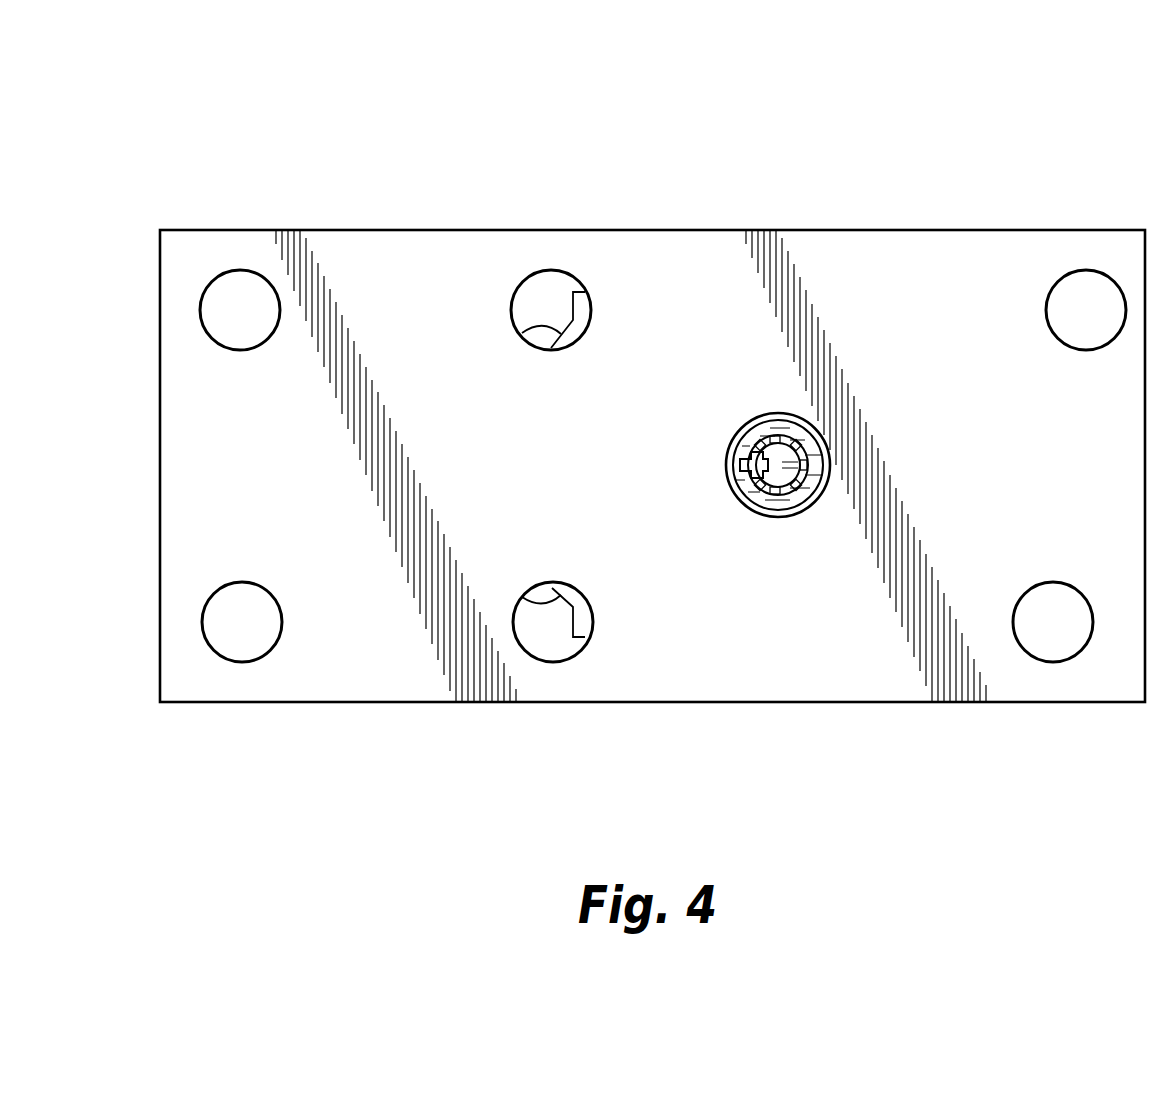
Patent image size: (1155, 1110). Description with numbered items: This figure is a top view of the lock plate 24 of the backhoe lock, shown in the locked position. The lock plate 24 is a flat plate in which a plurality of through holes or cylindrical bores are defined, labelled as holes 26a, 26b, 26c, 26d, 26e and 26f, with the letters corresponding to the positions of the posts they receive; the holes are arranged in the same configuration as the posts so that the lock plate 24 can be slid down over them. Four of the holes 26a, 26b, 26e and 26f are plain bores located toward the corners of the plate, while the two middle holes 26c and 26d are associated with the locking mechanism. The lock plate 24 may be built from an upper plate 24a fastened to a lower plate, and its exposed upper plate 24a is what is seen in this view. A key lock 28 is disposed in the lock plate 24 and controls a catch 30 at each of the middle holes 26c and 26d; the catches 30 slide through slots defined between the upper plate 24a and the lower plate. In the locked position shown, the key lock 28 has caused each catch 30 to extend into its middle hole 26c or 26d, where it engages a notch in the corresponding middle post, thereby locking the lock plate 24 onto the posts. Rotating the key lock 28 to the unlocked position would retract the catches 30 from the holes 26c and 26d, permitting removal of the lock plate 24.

The lock plate 24 is at (860, 136).
The upper plate 24a is at (791, 247).
The through hole 26a is at (239, 270).
The through hole 26b is at (240, 662).
The through hole 26c is at (548, 662).
The through hole 26d is at (549, 270).
The through hole 26e is at (1047, 662).
The through hole 26f is at (1086, 270).
The key lock 28 is at (745, 466).
The catch 30 is at (522, 336).